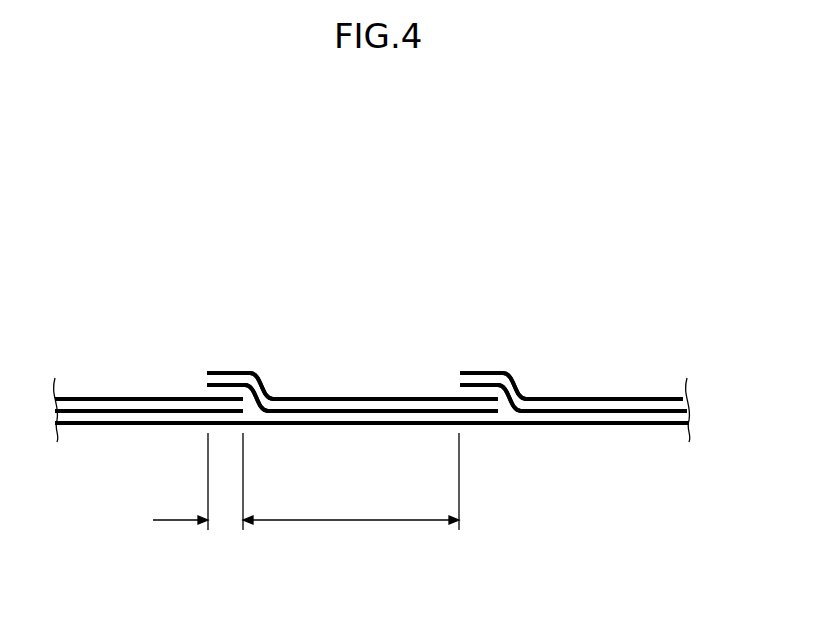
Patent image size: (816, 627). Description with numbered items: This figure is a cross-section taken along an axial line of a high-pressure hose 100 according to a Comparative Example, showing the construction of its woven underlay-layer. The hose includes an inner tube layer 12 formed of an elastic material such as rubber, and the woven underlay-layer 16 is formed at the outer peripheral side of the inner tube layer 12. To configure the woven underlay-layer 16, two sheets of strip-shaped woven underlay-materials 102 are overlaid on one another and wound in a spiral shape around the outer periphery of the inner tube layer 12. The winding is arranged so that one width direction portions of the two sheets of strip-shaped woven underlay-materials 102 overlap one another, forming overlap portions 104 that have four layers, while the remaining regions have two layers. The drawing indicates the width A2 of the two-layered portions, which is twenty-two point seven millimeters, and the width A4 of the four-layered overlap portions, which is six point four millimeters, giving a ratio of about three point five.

The high-pressure hose 100 is at (619, 273).
The inner tube layer 12 is at (655, 423).
The woven underlay-layer 16 is at (579, 396).
The strip-shaped woven underlay-material 102 is at (320, 398).
The overlap portion 104 is at (228, 371).
The width of four-layered portions A4 is at (226, 522).
The width of two-layered portions A2 is at (345, 522).